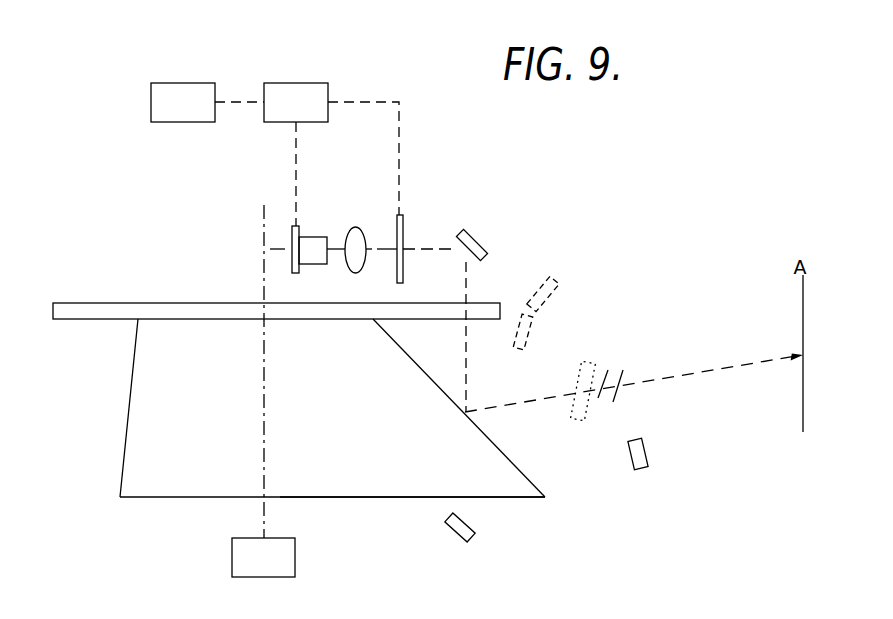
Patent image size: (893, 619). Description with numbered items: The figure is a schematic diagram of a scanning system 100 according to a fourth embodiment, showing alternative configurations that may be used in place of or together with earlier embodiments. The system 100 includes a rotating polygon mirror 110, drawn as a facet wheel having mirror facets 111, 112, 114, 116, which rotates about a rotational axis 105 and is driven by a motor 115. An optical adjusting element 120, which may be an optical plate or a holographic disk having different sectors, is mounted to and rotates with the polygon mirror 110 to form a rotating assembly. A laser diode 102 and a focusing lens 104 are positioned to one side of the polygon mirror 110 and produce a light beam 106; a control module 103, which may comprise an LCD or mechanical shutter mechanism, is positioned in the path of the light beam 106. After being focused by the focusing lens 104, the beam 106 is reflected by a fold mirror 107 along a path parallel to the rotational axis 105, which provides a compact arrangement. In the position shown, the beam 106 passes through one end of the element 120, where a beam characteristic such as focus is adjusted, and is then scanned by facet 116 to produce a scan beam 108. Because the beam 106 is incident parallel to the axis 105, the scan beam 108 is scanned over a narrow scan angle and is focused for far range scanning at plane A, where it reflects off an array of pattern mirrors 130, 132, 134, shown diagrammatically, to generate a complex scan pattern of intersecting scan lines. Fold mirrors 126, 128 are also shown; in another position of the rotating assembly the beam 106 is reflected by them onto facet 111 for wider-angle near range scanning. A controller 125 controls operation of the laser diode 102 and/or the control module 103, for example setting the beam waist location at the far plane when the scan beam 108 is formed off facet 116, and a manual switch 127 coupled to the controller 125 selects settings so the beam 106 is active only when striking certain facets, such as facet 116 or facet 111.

The scanning system 100 is at (577, 159).
The laser diode 102 is at (306, 237).
The control module 103 is at (403, 216).
The focusing lens 104 is at (353, 226).
The rotational axis 105 is at (263, 223).
The light beam 106 is at (372, 249).
The fold mirror 107 is at (478, 237).
The scan beam 108 is at (545, 397).
The rotating polygon mirror 110 is at (323, 438).
The mirror facet 111 is at (125, 445).
The mirror facet 112 is at (190, 497).
The mirror facet 114 is at (313, 497).
The motor 115 is at (263, 557).
The mirror facet 116 is at (513, 462).
The optical adjusting element 120 is at (154, 295).
The controller 125 is at (296, 102).
The fold mirror 126 is at (455, 535).
The manual switch 127 is at (183, 102).
The fold mirror 128 is at (640, 470).
The pattern mirror 130 is at (588, 354).
The pattern mirror 132 is at (558, 278).
The pattern mirror 134 is at (515, 349).